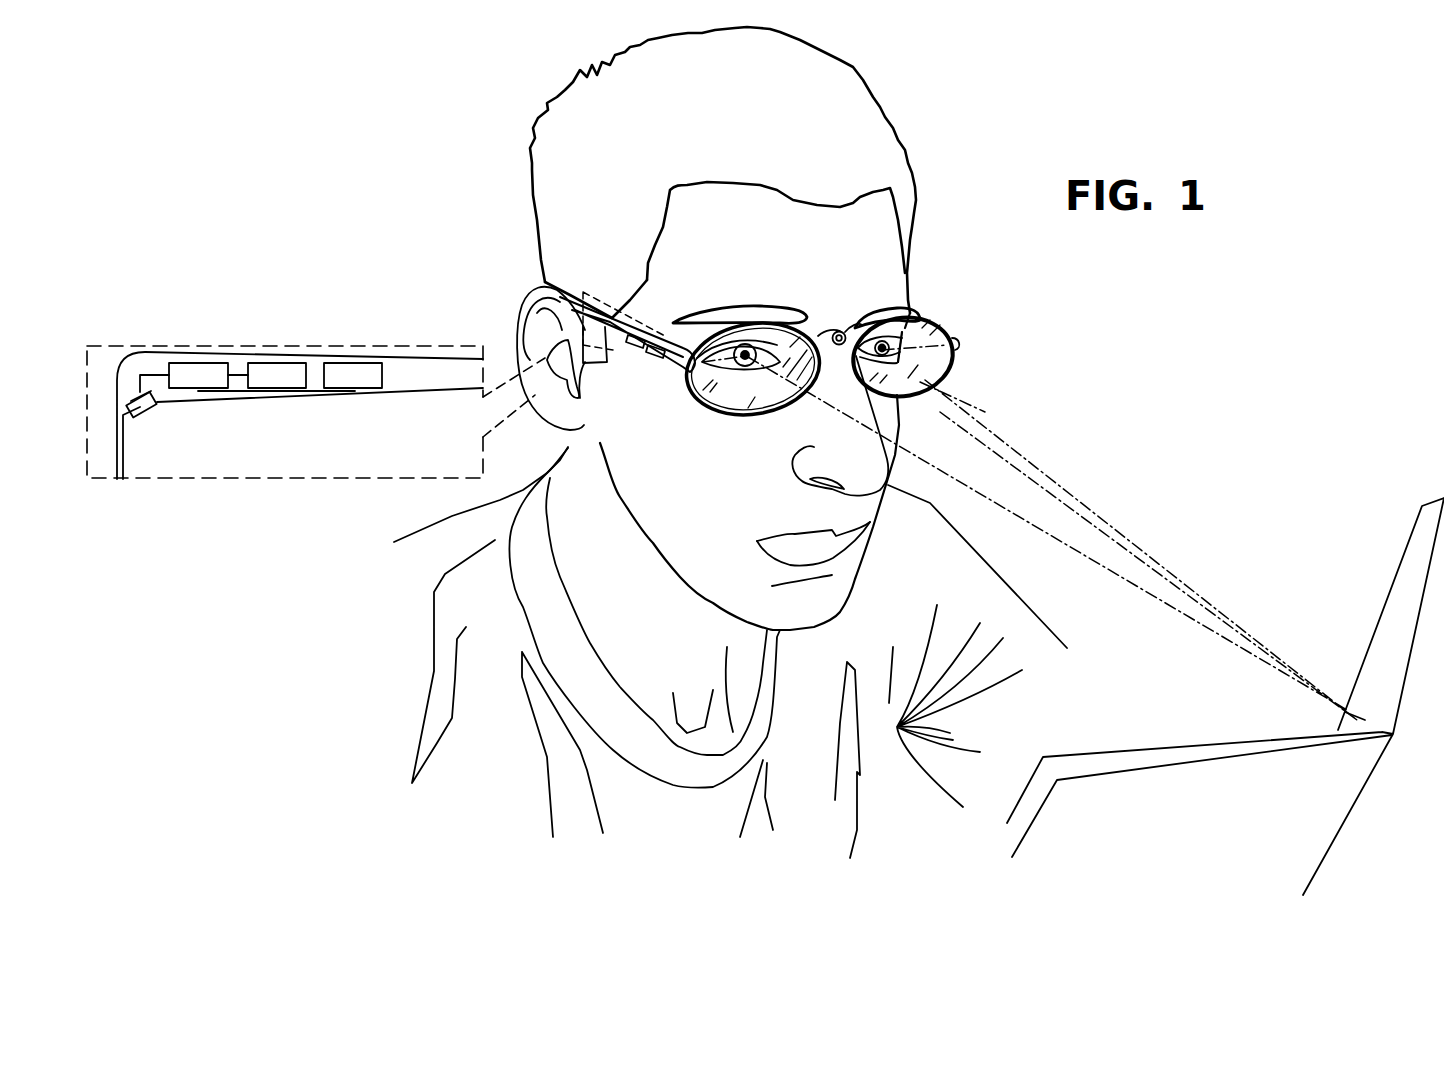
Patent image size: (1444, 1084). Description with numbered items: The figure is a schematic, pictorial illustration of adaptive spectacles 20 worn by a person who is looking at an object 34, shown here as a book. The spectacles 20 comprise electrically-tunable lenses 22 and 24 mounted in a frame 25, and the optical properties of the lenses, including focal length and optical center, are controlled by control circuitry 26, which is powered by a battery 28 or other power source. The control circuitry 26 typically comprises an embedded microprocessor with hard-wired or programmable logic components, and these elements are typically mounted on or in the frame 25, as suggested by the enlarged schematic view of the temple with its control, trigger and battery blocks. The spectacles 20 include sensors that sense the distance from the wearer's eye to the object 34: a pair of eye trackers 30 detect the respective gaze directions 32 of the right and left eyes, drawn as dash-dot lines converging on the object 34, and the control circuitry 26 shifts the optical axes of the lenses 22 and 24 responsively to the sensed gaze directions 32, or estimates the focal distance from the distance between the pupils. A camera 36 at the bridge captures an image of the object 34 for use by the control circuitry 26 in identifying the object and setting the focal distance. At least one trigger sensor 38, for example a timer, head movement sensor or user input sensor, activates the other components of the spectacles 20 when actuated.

The adaptive spectacles 20 is at (561, 364).
The electrically-tunable lens 22 is at (733, 400).
The electrically-tunable lens 24 is at (940, 372).
The frame 25 is at (700, 322).
The control circuitry 26 is at (657, 368).
The battery 28 is at (633, 311).
The eye tracker 30 is at (705, 378).
The gaze direction 32 is at (1097, 515).
The object 34 is at (1367, 710).
The camera 36 is at (838, 331).
The trigger sensor 38 is at (625, 366).